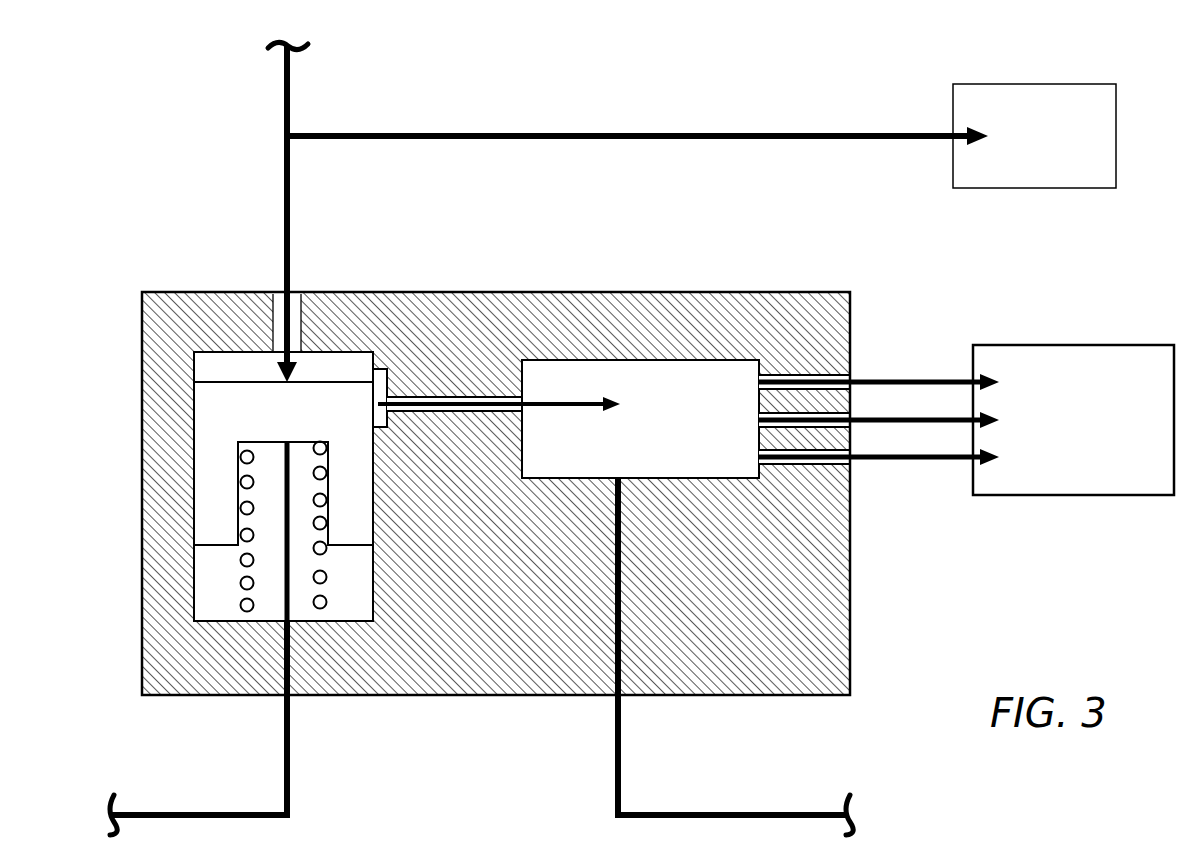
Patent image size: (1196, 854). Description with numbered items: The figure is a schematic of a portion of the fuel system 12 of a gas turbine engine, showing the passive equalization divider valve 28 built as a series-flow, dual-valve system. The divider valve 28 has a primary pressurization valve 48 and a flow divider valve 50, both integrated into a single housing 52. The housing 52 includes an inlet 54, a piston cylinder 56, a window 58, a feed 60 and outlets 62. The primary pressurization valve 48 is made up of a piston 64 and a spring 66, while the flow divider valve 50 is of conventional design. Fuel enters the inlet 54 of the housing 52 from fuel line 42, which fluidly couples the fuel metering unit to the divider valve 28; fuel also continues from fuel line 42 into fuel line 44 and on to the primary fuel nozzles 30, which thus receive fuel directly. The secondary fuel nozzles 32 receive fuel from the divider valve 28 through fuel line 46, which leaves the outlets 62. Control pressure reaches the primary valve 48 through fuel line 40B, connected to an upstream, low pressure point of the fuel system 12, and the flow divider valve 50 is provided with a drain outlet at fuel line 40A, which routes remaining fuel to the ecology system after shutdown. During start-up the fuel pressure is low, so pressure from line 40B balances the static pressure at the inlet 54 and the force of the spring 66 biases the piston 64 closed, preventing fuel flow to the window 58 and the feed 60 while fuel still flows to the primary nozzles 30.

The fuel system 12 is at (213, 208).
The flow divider valve 28 is at (852, 578).
The primary fuel nozzles 30 is at (1034, 136).
The secondary fuel nozzles 32 is at (1073, 420).
The fuel line 40A is at (620, 780).
The fuel line 40B is at (202, 812).
The fuel line 42 is at (290, 213).
The fuel line 44 is at (685, 133).
The fuel line 46 is at (902, 372).
The primary pressurization valve 48 is at (185, 465).
The flow divider valve 50 is at (640, 419).
The housing 52 is at (496, 493).
The inlet 54 is at (295, 300).
The piston cylinder 56 is at (336, 352).
The window 58 is at (380, 368).
The feed 60 is at (443, 397).
The outlets 62 is at (812, 368).
The piston 64 is at (283, 493).
The spring 66 is at (240, 583).